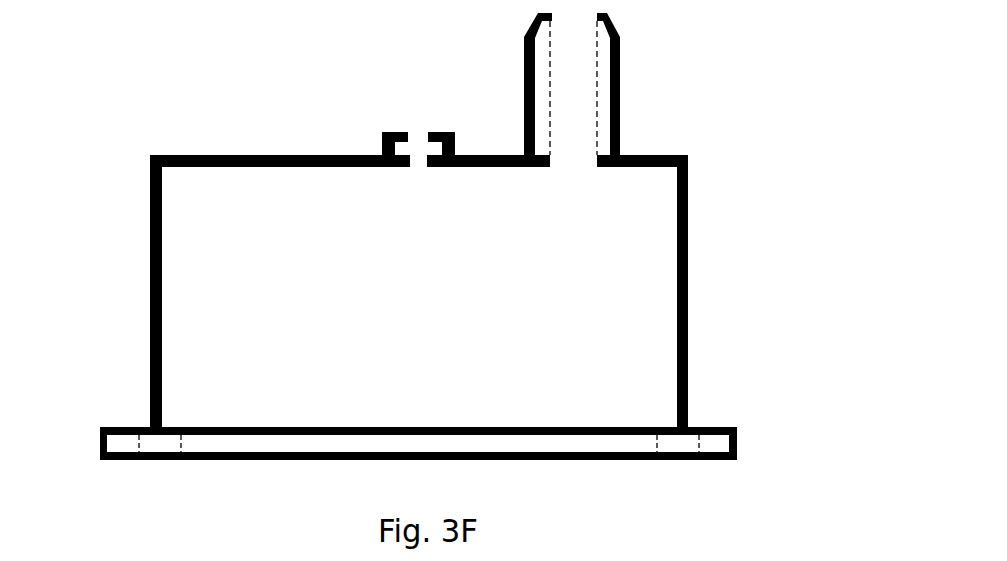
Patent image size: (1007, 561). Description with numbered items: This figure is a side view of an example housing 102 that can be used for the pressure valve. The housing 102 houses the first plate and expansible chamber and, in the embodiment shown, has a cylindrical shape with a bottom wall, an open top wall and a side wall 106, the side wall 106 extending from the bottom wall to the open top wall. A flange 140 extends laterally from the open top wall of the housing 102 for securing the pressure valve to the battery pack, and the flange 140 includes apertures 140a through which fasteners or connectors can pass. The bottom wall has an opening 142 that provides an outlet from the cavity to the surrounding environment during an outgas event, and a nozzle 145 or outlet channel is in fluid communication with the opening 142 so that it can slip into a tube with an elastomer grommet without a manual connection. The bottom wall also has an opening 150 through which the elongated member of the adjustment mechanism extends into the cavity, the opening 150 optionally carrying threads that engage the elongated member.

The housing 102 is at (188, 50).
The side wall 106 is at (688, 267).
The flange 140 is at (717, 442).
The apertures 140a is at (680, 447).
The opening 142 is at (570, 158).
The nozzle 145 is at (617, 34).
The opening 150 is at (413, 167).